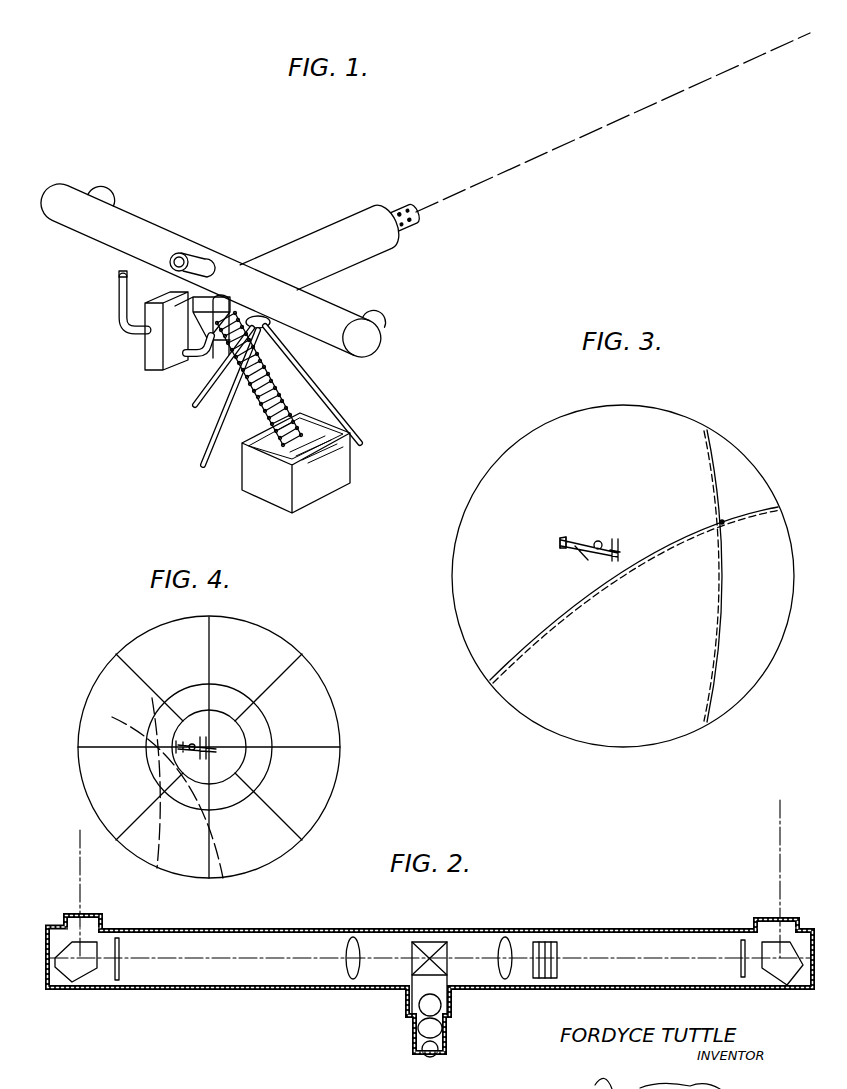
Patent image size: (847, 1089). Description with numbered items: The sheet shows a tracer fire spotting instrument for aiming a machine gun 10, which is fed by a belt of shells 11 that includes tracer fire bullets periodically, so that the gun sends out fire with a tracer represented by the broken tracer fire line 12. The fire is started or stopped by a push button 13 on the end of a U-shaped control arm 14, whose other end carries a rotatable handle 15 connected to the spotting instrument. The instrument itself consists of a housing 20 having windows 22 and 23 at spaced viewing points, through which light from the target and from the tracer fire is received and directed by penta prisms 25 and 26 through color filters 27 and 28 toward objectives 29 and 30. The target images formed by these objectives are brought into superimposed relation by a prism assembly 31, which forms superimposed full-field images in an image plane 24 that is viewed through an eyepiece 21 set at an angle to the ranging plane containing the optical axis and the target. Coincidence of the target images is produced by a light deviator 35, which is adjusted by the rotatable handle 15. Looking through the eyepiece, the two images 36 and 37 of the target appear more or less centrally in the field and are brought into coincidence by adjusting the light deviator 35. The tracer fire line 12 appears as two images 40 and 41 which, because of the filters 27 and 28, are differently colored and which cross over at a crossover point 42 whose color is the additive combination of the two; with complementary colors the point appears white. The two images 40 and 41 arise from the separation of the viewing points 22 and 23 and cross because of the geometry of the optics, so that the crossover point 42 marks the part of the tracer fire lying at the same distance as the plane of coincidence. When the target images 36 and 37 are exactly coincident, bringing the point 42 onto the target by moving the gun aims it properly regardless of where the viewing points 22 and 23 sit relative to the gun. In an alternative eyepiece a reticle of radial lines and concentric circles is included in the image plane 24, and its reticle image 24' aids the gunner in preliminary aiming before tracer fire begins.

In FIG. 1, the machine gun 10 is at (330, 228).
In FIG. 1, the belt of shells 11 is at (248, 427).
In FIG. 1, the tracer fire line 12 is at (509, 170).
In FIG. 1, the push button 13 is at (120, 272).
In FIG. 1, the U-shaped control arm 14 is at (130, 330).
In FIG. 1, the rotatable handle 15 is at (218, 338).
In FIG. 1, the housing 20 is at (142, 228).
In FIG. 2, the housing 20 is at (237, 992).
In FIG. 1, the eyepiece 21 is at (200, 258).
In FIG. 2, the eyepiece 21 is at (432, 1053).
In FIG. 1, the window 22 is at (395, 318).
In FIG. 2, the window 22 is at (768, 930).
In FIG. 1, the window 23 is at (103, 188).
In FIG. 2, the window 23 is at (90, 922).
In FIG. 2, the image plane 24 is at (457, 1025).
In FIG. 4, the reticle image 24' is at (224, 747).
In FIG. 2, the penta prism 25 is at (783, 943).
In FIG. 2, the penta prism 26 is at (73, 942).
In FIG. 2, the color filter 27 is at (740, 943).
In FIG. 2, the color filter 28 is at (122, 950).
In FIG. 2, the objective 29 is at (510, 937).
In FIG. 2, the objective 30 is at (350, 938).
In FIG. 2, the prism assembly 31 is at (438, 942).
In FIG. 2, the light deviator 35 is at (557, 940).
In FIG. 3, the target image 36 is at (583, 542).
In FIG. 3, the target image 37 is at (560, 542).
In FIG. 3, the tracer fire image 40 is at (585, 605).
In FIG. 3, the tracer fire image 41 is at (717, 642).
In FIG. 3, the crossover point 42 is at (722, 523).